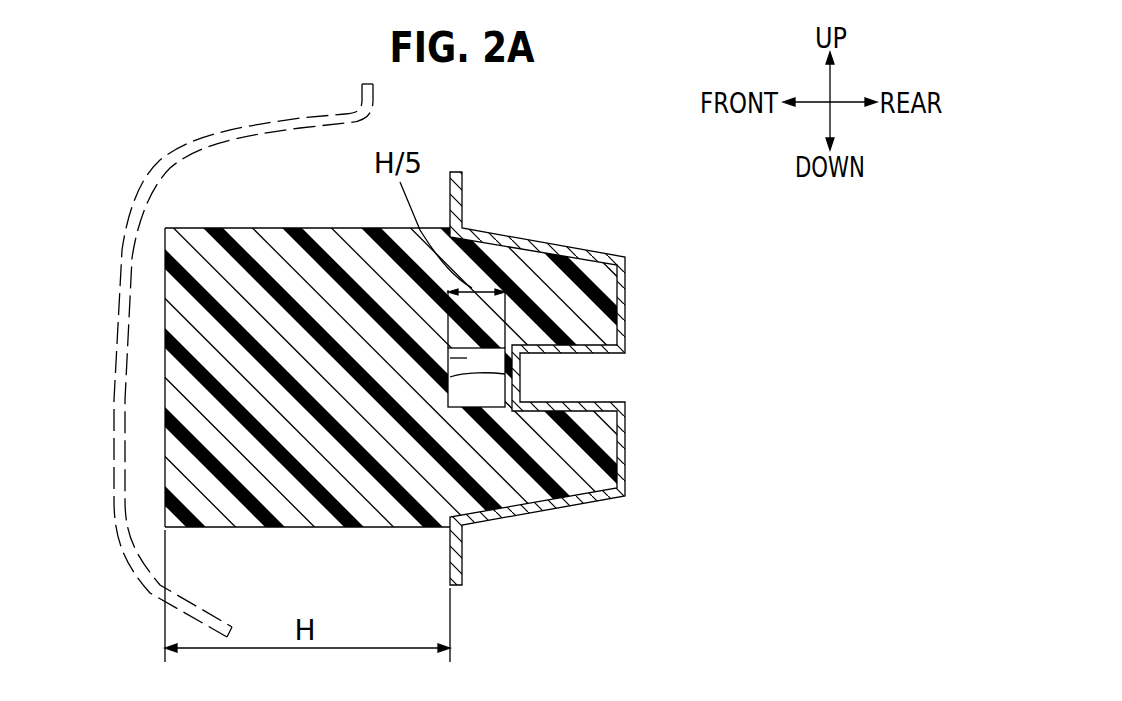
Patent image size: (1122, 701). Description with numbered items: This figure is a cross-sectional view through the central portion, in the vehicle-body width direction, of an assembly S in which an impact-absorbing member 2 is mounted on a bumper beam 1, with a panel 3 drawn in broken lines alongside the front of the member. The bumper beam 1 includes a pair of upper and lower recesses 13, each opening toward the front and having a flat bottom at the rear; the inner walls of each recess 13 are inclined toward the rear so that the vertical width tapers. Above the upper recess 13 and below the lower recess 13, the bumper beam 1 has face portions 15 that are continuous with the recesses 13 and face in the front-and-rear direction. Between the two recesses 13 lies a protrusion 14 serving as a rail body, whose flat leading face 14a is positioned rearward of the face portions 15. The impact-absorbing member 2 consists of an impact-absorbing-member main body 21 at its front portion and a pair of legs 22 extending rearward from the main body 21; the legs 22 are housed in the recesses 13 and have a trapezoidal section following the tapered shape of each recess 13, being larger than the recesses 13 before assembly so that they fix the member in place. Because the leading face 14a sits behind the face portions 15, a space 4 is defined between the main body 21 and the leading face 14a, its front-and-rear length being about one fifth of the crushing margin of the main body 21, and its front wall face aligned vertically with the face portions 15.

The bumper beam 1 is at (537, 250).
The impact-absorbing member 2 is at (165, 452).
The panel 3 is at (303, 117).
The space 4 is at (450, 358).
The recess 13 is at (585, 331).
The protrusion 14 is at (500, 398).
The leading face 14a is at (450, 377).
The face portion 15 is at (450, 203).
The impact-absorbing-member main body 21 is at (262, 250).
The leg 22 is at (588, 306).
The cushion assembly S is at (607, 140).